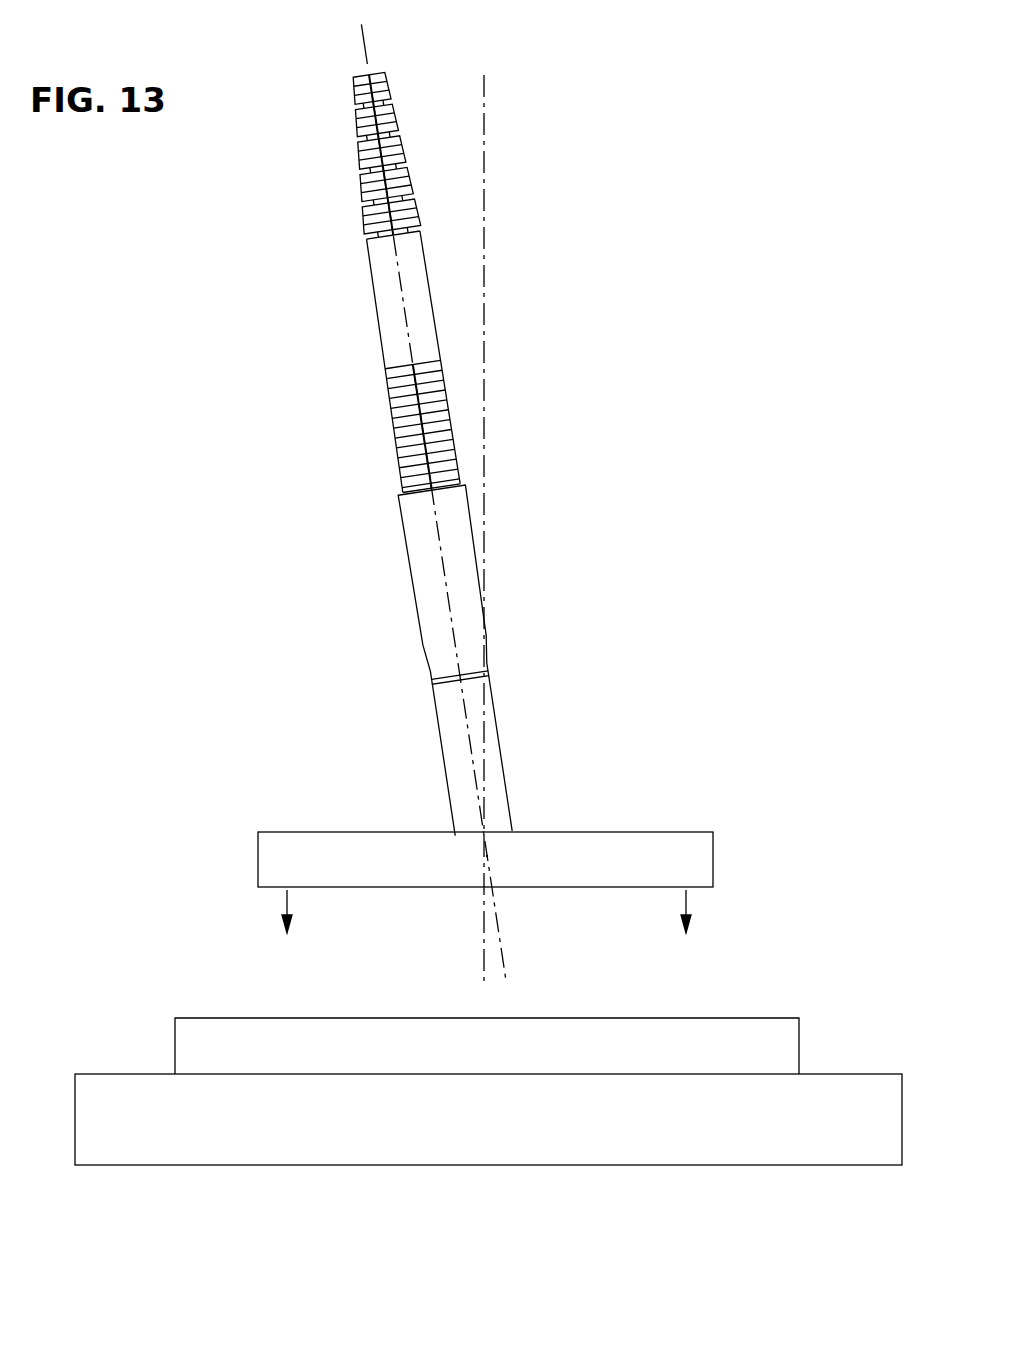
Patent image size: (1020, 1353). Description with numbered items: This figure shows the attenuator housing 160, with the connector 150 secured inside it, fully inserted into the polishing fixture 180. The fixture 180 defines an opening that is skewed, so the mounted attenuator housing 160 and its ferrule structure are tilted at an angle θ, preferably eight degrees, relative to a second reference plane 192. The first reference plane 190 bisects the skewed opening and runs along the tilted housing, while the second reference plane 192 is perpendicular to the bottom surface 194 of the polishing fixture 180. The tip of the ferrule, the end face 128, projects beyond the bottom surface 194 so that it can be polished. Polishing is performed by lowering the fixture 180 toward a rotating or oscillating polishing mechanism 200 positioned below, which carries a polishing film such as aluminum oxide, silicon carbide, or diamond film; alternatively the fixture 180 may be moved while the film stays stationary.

The first reference plane 190 is at (360, 42).
The second reference plane 192 is at (485, 190).
The connector 150 is at (456, 417).
The attenuator housing 160 is at (507, 737).
The polishing fixture 180 is at (660, 831).
The bottom surface 194 is at (272, 890).
The end face 128 is at (499, 888).
The polishing mechanism 200 is at (838, 1073).